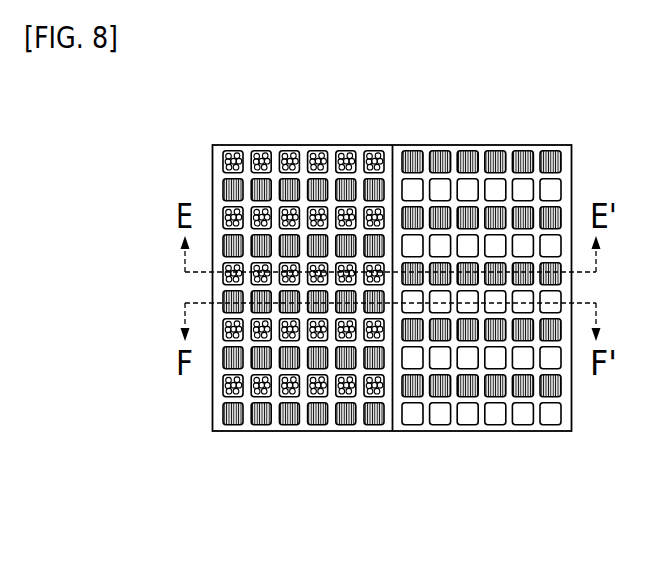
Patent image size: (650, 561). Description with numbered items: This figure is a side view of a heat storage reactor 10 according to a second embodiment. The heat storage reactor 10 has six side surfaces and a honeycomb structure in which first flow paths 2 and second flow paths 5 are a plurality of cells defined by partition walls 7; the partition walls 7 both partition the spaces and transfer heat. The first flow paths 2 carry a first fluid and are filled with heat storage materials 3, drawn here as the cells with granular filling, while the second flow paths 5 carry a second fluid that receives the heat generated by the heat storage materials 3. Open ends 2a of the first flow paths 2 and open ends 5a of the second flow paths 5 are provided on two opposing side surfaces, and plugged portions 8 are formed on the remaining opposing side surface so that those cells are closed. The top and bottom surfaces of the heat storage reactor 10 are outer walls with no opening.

The heat storage reactor 10 is at (385, 314).
The open ends of the first flow paths 2a is at (237, 145).
The first flow paths 2 is at (297, 152).
The heat storage materials 3 is at (348, 152).
The open ends of the second flow paths 5a is at (543, 143).
The second flow paths 5 is at (495, 415).
The partition walls 7 is at (303, 413).
The plugged portions 8 is at (438, 156).